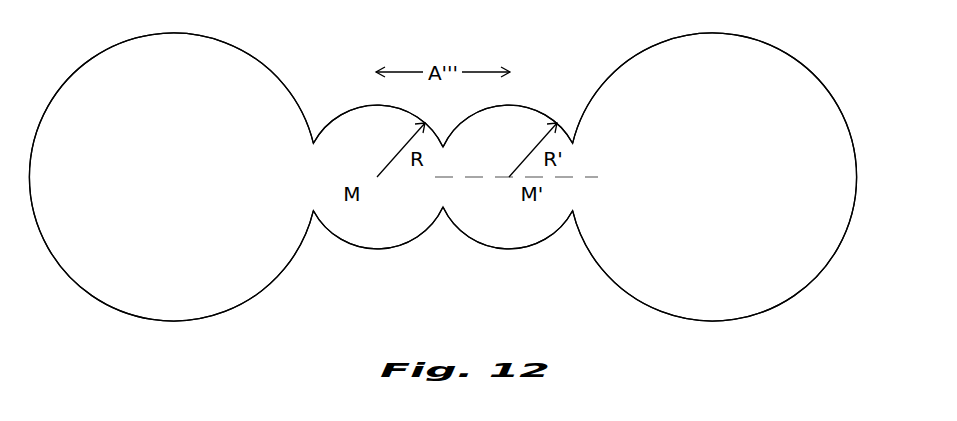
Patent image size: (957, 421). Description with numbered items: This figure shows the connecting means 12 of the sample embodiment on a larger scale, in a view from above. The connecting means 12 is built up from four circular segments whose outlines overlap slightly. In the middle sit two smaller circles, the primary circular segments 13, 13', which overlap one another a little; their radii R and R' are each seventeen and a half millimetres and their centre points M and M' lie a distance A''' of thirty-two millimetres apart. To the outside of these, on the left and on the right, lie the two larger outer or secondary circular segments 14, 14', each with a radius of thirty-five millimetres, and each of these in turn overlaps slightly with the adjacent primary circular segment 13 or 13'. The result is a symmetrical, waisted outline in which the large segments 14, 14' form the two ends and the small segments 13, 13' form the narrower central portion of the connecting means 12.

The connecting means 12 is at (820, 60).
The primary circular segment 13 is at (377, 198).
The primary circular segment 13' is at (508, 195).
The secondary circular segment 14 is at (171, 193).
The secondary circular segment 14' is at (715, 199).